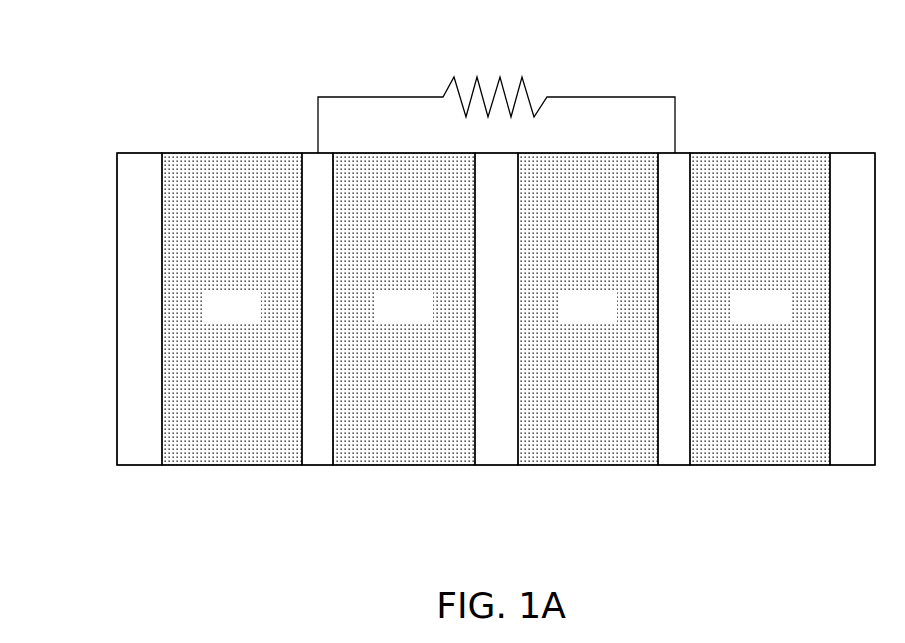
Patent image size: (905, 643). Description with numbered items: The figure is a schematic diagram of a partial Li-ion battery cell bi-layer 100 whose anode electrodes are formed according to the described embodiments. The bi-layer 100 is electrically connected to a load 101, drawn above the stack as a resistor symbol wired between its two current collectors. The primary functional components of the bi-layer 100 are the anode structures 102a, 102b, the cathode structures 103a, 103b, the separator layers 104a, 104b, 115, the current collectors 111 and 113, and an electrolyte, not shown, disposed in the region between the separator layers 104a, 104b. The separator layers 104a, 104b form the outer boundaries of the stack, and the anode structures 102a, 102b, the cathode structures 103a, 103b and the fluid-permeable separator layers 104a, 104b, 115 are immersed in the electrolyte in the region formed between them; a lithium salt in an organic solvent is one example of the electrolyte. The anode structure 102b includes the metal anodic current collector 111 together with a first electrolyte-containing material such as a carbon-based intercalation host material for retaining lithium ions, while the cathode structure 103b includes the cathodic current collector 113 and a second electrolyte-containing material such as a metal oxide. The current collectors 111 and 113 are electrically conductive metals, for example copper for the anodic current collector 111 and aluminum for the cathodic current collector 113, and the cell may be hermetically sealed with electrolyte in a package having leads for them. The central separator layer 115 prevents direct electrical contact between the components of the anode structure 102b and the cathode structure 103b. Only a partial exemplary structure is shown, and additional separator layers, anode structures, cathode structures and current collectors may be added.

The Li-ion battery cell bi-layer 100 is at (113, 136).
The load 101 is at (527, 87).
The anode structure 102a is at (207, 320).
The anode structure 102b is at (379, 320).
The cathode structure 103a is at (736, 320).
The cathode structure 103b is at (563, 320).
The separator layer 104a is at (142, 326).
The separator layer 104b is at (862, 466).
The anodic current collector 111 is at (318, 466).
The cathodic current collector 113 is at (677, 466).
The separator layer 115 is at (475, 473).